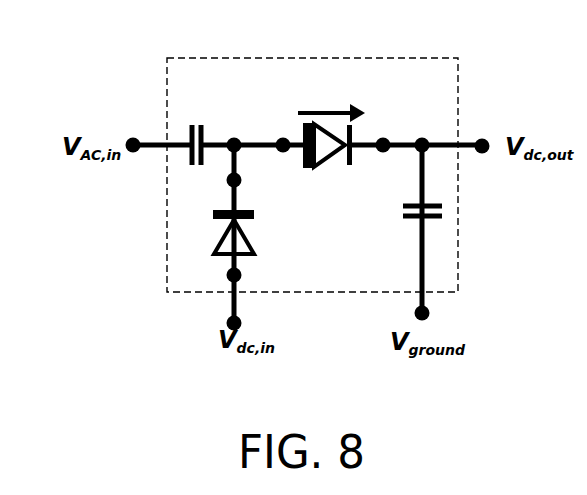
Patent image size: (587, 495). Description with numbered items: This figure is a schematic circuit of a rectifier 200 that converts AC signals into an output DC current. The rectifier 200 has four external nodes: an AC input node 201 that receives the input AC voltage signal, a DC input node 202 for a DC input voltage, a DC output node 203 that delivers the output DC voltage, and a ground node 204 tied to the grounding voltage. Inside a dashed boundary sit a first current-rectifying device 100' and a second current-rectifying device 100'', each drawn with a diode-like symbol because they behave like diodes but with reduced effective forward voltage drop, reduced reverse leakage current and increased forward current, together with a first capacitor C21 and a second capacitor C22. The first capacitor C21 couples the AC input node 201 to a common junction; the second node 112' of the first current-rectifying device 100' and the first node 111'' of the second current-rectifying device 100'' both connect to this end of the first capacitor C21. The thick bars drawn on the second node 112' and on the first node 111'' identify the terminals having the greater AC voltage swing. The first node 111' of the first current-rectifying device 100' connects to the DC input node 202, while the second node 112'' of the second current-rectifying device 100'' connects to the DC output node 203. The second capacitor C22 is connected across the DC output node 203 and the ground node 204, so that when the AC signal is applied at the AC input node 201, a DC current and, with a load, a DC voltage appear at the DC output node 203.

The rectifier 200 is at (246, 156).
The AC input node 201 is at (140, 130).
The DC input node 202 is at (258, 323).
The DC output node 203 is at (488, 131).
The ground node 204 is at (447, 323).
The first current-rectifying device 100' is at (263, 232).
The second current-rectifying device 100'' is at (334, 154).
The first node of the first current-rectifying device 111' is at (210, 274).
The second node of the first current-rectifying device 112' is at (260, 179).
The first node of the second current-rectifying device 111'' is at (271, 130).
The second node of the second current-rectifying device 112'' is at (400, 130).
The first capacitor C21 is at (203, 124).
The second capacitor C22 is at (410, 228).